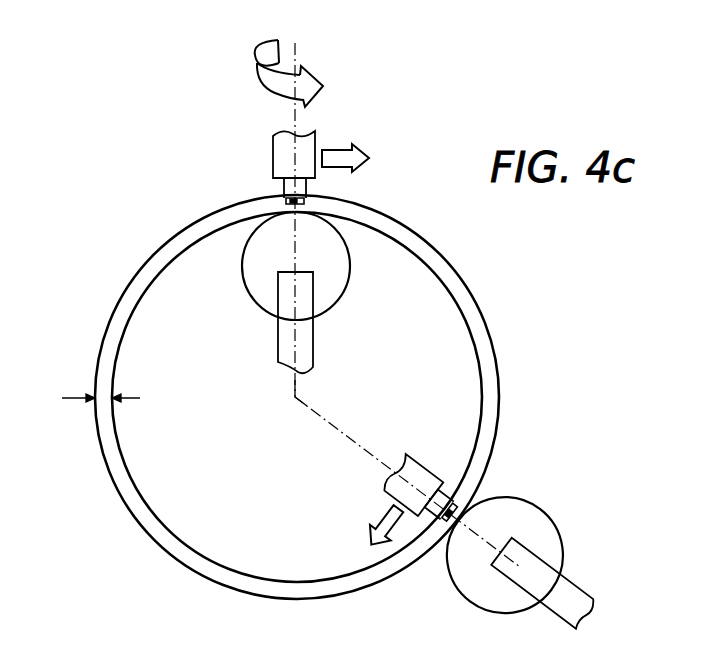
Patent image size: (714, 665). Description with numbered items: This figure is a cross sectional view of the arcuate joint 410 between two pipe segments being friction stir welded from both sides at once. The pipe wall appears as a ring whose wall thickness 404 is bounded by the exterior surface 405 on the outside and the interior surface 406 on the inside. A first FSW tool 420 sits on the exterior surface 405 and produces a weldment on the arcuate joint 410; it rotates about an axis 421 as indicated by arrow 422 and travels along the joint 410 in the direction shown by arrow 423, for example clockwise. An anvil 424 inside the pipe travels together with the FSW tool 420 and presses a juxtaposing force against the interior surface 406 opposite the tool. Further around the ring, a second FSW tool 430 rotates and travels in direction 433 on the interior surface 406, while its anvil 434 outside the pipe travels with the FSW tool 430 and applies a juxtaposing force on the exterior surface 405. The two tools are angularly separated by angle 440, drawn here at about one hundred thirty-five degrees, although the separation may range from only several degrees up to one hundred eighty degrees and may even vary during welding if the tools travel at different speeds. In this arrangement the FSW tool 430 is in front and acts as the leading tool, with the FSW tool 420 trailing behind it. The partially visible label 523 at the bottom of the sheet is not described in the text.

The wall thickness 404 is at (79, 398).
The exterior surface 405 is at (137, 272).
The interior surface 406 is at (124, 320).
The arcuate joint 410 is at (167, 240).
The FSW tool 420 is at (283, 190).
The axis 421 is at (297, 58).
The arrow 422 is at (250, 78).
The arrow 423 is at (343, 147).
The anvil 424 is at (344, 278).
The FSW tool 430 is at (451, 500).
The direction 433 is at (397, 512).
The anvil 434 is at (473, 590).
The angle 440 is at (298, 394).
The element 523 is at (145, 664).